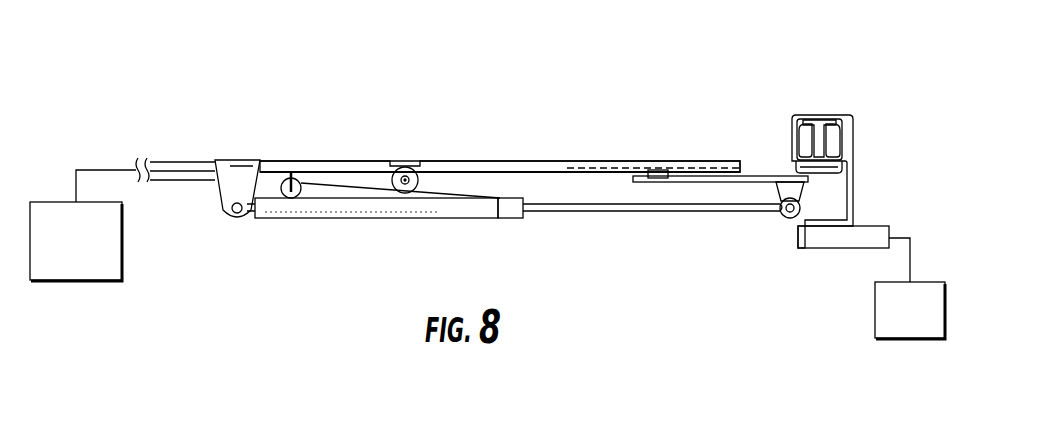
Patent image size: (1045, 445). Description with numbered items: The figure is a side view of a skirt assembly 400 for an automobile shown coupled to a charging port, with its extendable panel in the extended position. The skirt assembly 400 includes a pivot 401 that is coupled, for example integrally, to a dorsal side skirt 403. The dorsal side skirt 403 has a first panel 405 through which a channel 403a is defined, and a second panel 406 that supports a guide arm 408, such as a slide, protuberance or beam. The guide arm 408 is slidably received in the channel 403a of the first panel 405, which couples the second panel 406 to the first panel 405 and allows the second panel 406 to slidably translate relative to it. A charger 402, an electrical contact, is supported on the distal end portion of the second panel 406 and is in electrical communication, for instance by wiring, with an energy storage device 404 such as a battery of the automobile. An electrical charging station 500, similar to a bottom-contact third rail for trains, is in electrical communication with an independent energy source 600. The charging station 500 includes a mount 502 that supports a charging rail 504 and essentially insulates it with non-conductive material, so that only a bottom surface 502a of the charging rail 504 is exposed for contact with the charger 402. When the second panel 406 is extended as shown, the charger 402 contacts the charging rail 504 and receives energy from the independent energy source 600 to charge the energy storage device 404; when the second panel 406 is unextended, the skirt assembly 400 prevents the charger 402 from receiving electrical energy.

The skirt assembly 400 is at (295, 124).
The pivot 401 is at (405, 165).
The charger 402 is at (795, 180).
The dorsal side skirt 403 is at (503, 160).
The channel 403a is at (600, 165).
The energy storage device 404 is at (94, 247).
The first panel 405 is at (460, 160).
The second panel 406 is at (690, 178).
The guide arm 408 is at (656, 170).
The electrical charging station 500 is at (860, 163).
The mount 502 is at (856, 127).
The bottom surface 502a is at (832, 165).
The charging rail 504 is at (818, 125).
The independent energy source 600 is at (929, 328).